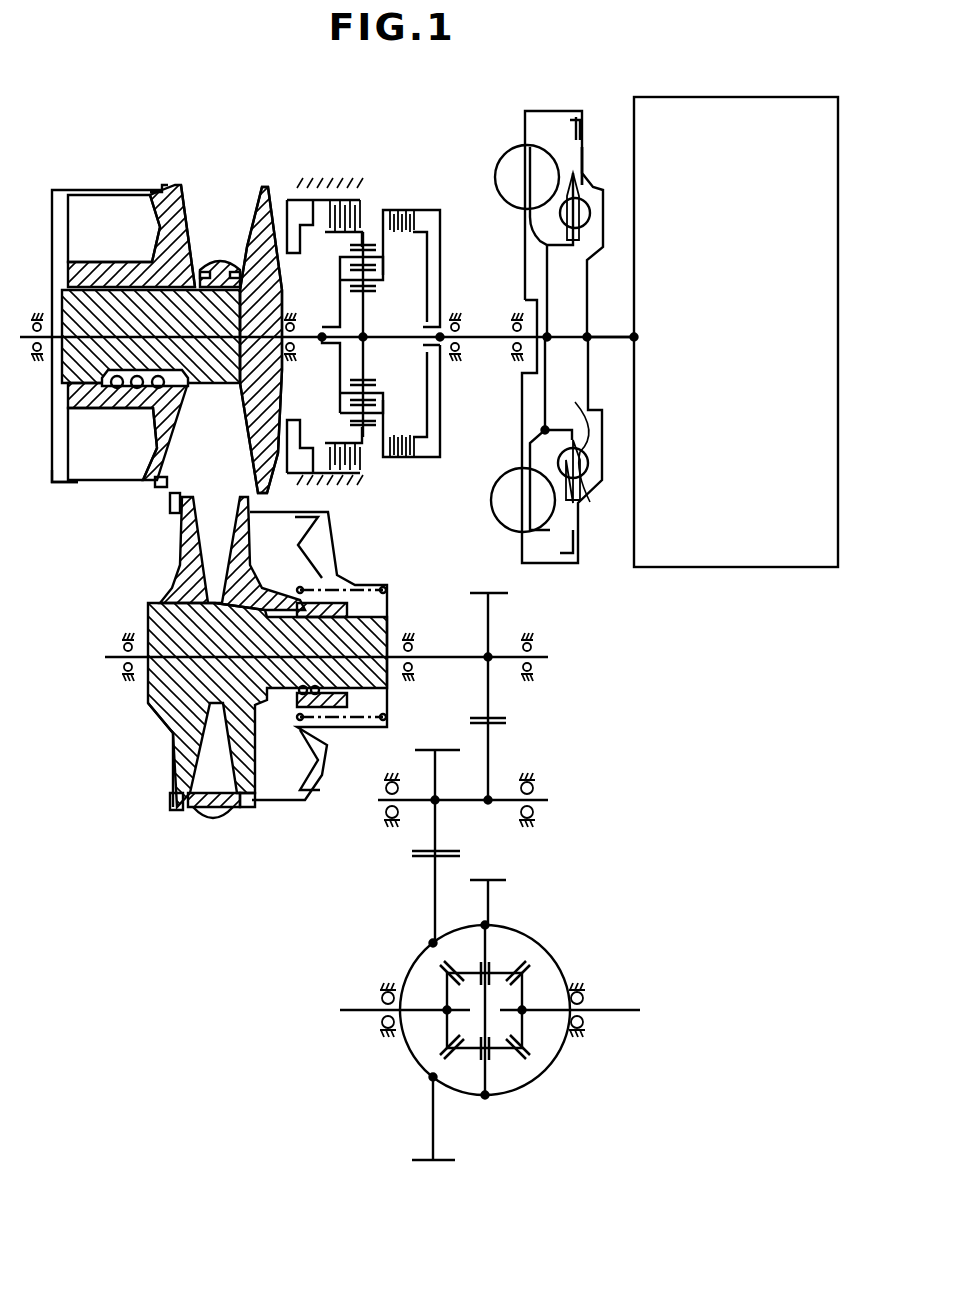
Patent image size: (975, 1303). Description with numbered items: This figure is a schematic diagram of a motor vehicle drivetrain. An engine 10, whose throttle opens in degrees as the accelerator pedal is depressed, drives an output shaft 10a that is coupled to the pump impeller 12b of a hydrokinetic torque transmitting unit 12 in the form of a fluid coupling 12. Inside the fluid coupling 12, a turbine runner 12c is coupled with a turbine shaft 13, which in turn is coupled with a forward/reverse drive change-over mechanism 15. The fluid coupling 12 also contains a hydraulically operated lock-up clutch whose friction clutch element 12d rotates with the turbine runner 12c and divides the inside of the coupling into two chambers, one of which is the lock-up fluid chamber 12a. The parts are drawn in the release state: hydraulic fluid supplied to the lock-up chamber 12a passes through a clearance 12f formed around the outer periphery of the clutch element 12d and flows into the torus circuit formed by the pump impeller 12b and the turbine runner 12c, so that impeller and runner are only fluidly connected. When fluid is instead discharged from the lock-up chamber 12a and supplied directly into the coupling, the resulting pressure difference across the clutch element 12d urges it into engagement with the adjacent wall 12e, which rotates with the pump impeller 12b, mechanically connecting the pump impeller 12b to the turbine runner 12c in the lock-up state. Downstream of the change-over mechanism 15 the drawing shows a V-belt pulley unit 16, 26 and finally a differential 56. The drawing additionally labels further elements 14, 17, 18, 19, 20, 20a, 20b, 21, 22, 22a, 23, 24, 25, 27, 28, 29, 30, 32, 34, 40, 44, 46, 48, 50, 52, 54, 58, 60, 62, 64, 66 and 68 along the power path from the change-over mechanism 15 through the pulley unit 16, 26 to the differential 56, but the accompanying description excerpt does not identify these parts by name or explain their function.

The engine 10 is at (700, 97).
The output shaft 10a is at (600, 338).
The hydrokinetic torque transmitting unit 12 is at (557, 108).
The lock-up fluid chamber 12a is at (588, 468).
The pump impeller 12b is at (500, 487).
The turbine runner 12c is at (535, 490).
The friction clutch element 12d is at (583, 147).
The adjacent wall 12e is at (582, 128).
The clearance 12f is at (572, 565).
The turbine shaft 13 is at (485, 339).
The output shaft 14 is at (320, 338).
The forward/reverse drive change-over mechanism 15 is at (335, 160).
The V-belt pulley unit 16 is at (262, 177).
The planetary gear set 17 is at (398, 272).
The clutch rotor 18 is at (265, 185).
The sun gear shaft 19 is at (370, 343).
The electromagnetic coil housing 20 is at (88, 197).
The housing flange 20a is at (60, 478).
The housing bracket 20b is at (160, 193).
The pinion gear 21 is at (375, 387).
The clutch armature 22 is at (175, 185).
The armature friction face 22a is at (187, 205).
The clutch gear 23 is at (370, 423).
The sleeve 24 is at (185, 483).
The housing bracket 25 is at (330, 387).
The V-belt pulley unit 26 is at (203, 820).
The clutch plates 27 is at (370, 448).
The drive shaft 28 is at (455, 660).
The hub 29 is at (152, 591).
The hub flange 30 is at (180, 753).
The bearing bracket 32 is at (278, 787).
The retainer 34 is at (247, 805).
The clutch 40 is at (410, 210).
The output gear 44 is at (445, 1163).
The intermediate shaft 46 is at (474, 590).
The gear 48 is at (492, 860).
The clutch 50 is at (365, 207).
The gear 52 is at (502, 798).
The counter shaft 54 is at (433, 820).
The differential 56 is at (545, 938).
The bevel gear 58 is at (510, 1045).
The bevel gear 60 is at (468, 970).
The side gear 62 is at (445, 1040).
The side gear 64 is at (550, 985).
The left axle 66 is at (350, 1012).
The right axle 68 is at (620, 1012).